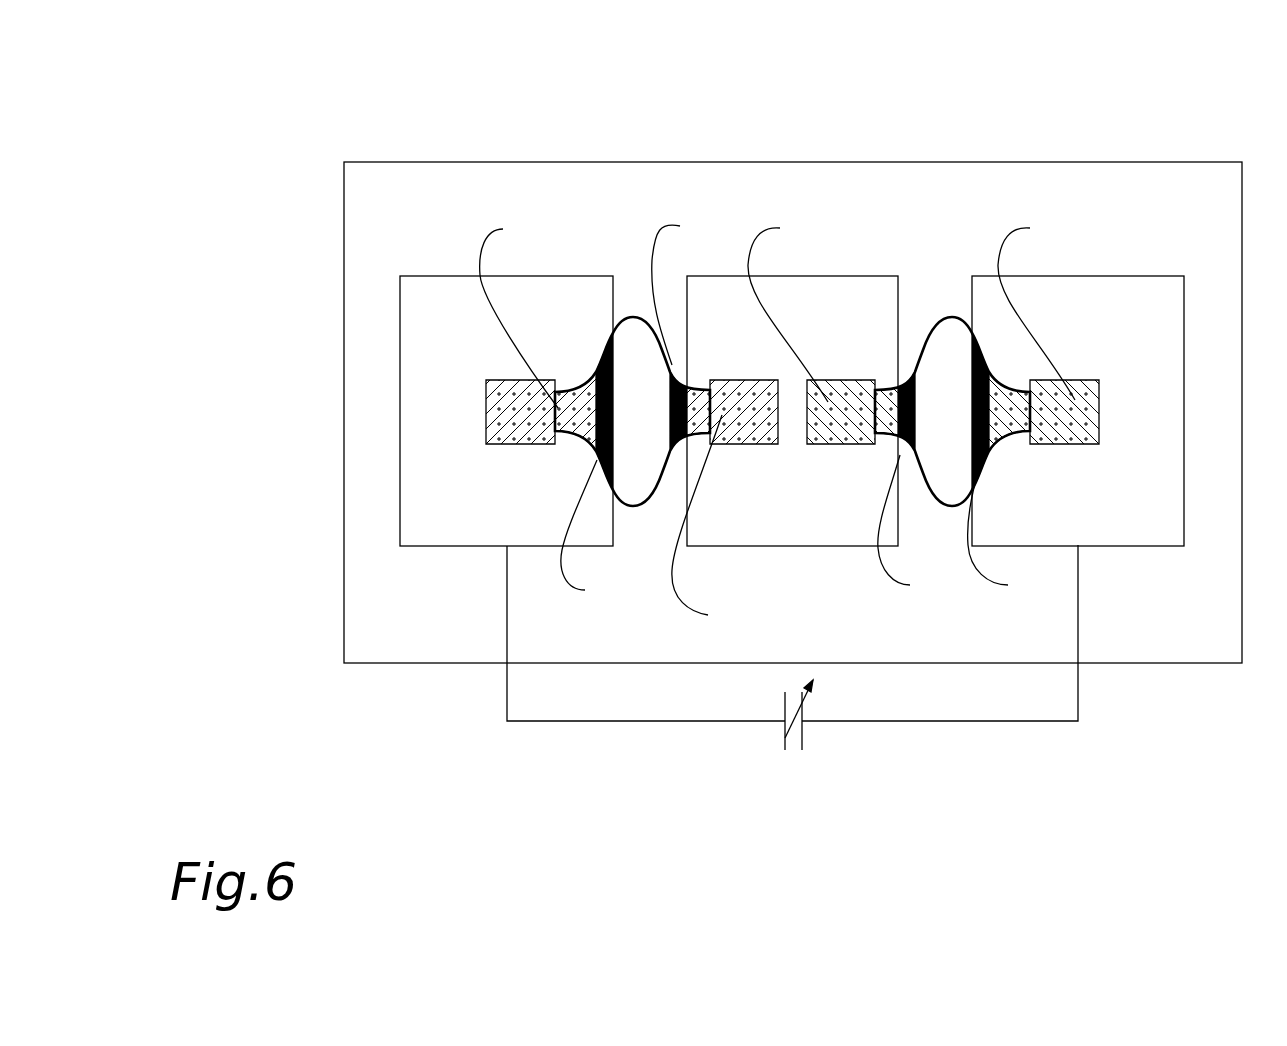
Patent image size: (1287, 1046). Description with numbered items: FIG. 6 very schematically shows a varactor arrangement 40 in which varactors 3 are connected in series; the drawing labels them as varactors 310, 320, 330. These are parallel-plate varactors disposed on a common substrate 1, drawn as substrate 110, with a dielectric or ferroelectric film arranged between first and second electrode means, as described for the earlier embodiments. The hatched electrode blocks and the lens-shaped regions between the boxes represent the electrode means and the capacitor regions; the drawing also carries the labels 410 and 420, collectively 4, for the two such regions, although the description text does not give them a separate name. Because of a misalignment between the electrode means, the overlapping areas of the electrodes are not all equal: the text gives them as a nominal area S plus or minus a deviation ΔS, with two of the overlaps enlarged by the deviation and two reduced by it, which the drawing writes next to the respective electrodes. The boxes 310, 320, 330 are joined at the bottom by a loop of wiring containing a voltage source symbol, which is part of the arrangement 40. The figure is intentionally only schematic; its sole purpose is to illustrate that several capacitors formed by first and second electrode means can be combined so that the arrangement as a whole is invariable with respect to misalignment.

The substrate 110 is at (402, 188).
The substrate 1 is at (793, 359).
The varactor 310 is at (463, 534).
The varactor 320 is at (852, 535).
The varactor 330 is at (1165, 534).
The varactor 3 is at (803, 451).
The first gap / bulb region 410 is at (632, 325).
The second gap / bulb region 420 is at (942, 325).
The gap region 4 is at (792, 337).
The varactor arrangement 40 is at (581, 752).